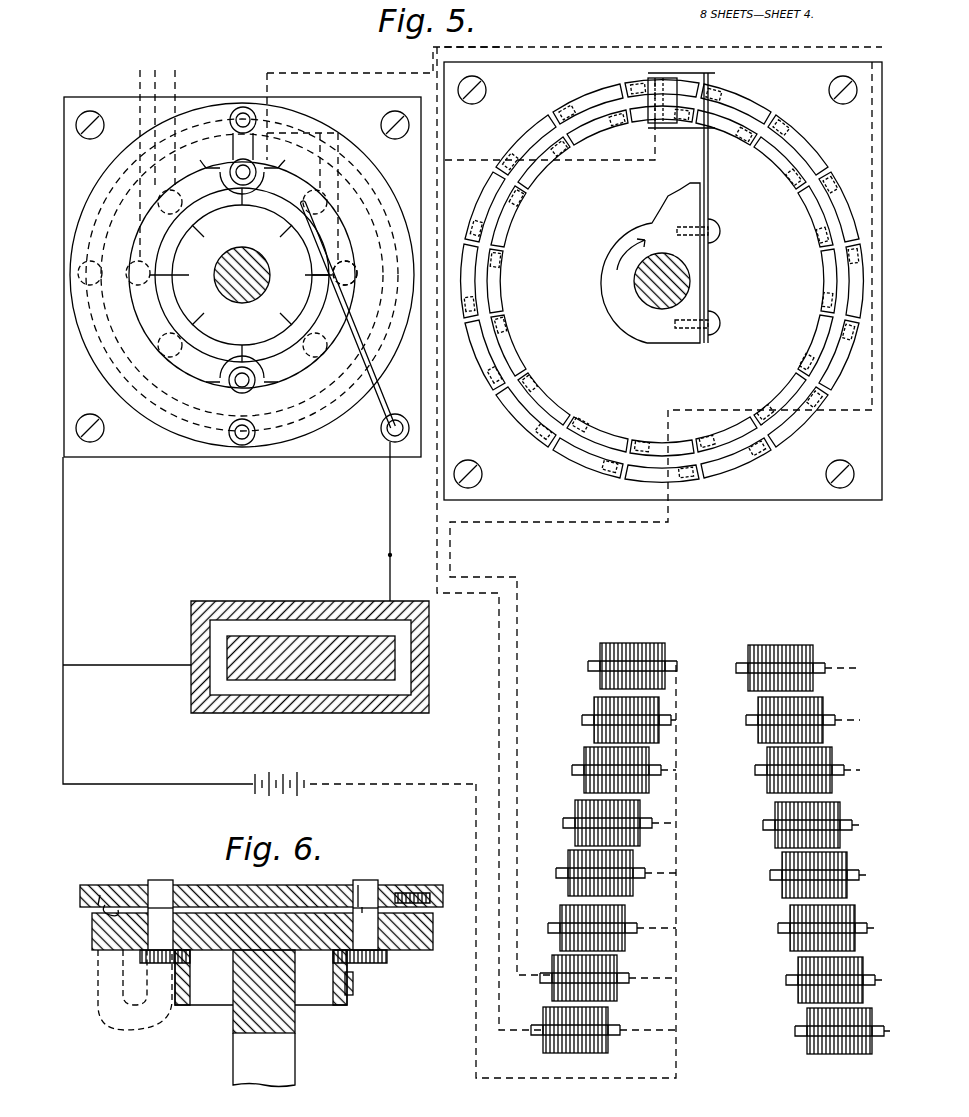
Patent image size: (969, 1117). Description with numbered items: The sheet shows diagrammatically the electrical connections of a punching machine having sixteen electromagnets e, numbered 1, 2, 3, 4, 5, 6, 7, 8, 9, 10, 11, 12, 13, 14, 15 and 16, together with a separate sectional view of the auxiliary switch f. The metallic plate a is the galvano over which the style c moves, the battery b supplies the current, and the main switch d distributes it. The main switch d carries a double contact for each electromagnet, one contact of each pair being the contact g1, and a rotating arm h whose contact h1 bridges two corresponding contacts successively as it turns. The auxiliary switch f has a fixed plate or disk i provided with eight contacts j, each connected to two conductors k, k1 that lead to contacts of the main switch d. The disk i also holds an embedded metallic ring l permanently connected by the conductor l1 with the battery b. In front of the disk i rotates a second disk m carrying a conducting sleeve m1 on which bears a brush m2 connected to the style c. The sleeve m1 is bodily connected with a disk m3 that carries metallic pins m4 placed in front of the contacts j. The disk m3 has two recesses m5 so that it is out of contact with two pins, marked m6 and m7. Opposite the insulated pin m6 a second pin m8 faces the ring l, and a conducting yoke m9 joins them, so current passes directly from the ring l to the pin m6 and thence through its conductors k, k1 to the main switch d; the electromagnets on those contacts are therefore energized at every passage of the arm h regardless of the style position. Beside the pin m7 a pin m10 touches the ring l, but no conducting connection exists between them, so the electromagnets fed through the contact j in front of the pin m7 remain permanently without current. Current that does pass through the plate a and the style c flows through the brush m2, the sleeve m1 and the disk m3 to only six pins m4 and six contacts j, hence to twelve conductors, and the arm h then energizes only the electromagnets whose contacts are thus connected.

In FIG. 5, the electromagnet 1 is at (636, 90).
In FIG. 5, the electromagnet 2 is at (728, 96).
In FIG. 5, the electromagnet 3 is at (797, 133).
In FIG. 5, the electromagnet 4 is at (838, 186).
In FIG. 5, the electromagnet 5 is at (855, 252).
In FIG. 5, the electromagnet 6 is at (850, 345).
In FIG. 5, the electromagnet 7 is at (822, 406).
In FIG. 5, the electromagnet 8 is at (755, 462).
In FIG. 5, the electromagnet 9 is at (683, 478).
In FIG. 5, the electromagnet 10 is at (600, 470).
In FIG. 5, the electromagnet 11 is at (538, 440).
In FIG. 5, the electromagnet 12 is at (485, 368).
In FIG. 5, the electromagnet 13 is at (472, 300).
In FIG. 5, the electromagnet 14 is at (475, 222).
In FIG. 5, the electromagnet 15 is at (512, 155).
In FIG. 5, the electromagnet 16 is at (572, 106).
In FIG. 5, the metallic plate a is at (283, 601).
In FIG. 5, the battery b is at (276, 772).
In FIG. 5, the style c is at (384, 572).
In FIG. 5, the main switch d is at (437, 470).
In FIG. 5, the electromagnets e is at (600, 655).
In FIG. 5, the auxiliary switch f is at (155, 462).
In FIG. 5, the contact g1 is at (645, 332).
In FIG. 5, the rotating arm h is at (708, 285).
In FIG. 5, the contact h1 is at (653, 78).
In FIG. 5, the conductor k is at (500, 62).
In FIG. 6, the conductor k is at (370, 885).
In FIG. 5, the conductor k1 is at (663, 64).
In FIG. 6, the conductor k1 is at (366, 885).
In FIG. 6, the metallic ring l is at (110, 893).
In FIG. 5, the conductor l1 is at (64, 568).
In FIG. 5, the rotating disk m is at (285, 247).
In FIG. 6, the rotating disk m is at (433, 933).
In FIG. 5, the conducting sleeve m1 is at (243, 265).
In FIG. 6, the conducting sleeve m1 is at (348, 1003).
In FIG. 5, the brush m2 is at (372, 360).
In FIG. 6, the brush m2 is at (355, 980).
In FIG. 5, the disk m3 is at (310, 385).
In FIG. 6, the disk m3 is at (168, 963).
In FIG. 5, the metallic pins m4 is at (357, 273).
In FIG. 6, the metallic pins m4 is at (158, 925).
In FIG. 5, the recess m5 is at (283, 175).
In FIG. 5, the pin m6 is at (243, 172).
In FIG. 5, the pin m7 is at (250, 390).
In FIG. 5, the pin m8 is at (243, 107).
In FIG. 5, the conducting yoke m9 is at (233, 147).
In FIG. 6, the conducting yoke m9 is at (110, 1012).
In FIG. 5, the pin m10 is at (240, 445).
In FIG. 6, the disk i is at (410, 893).
In FIG. 6, the contacts j is at (160, 893).